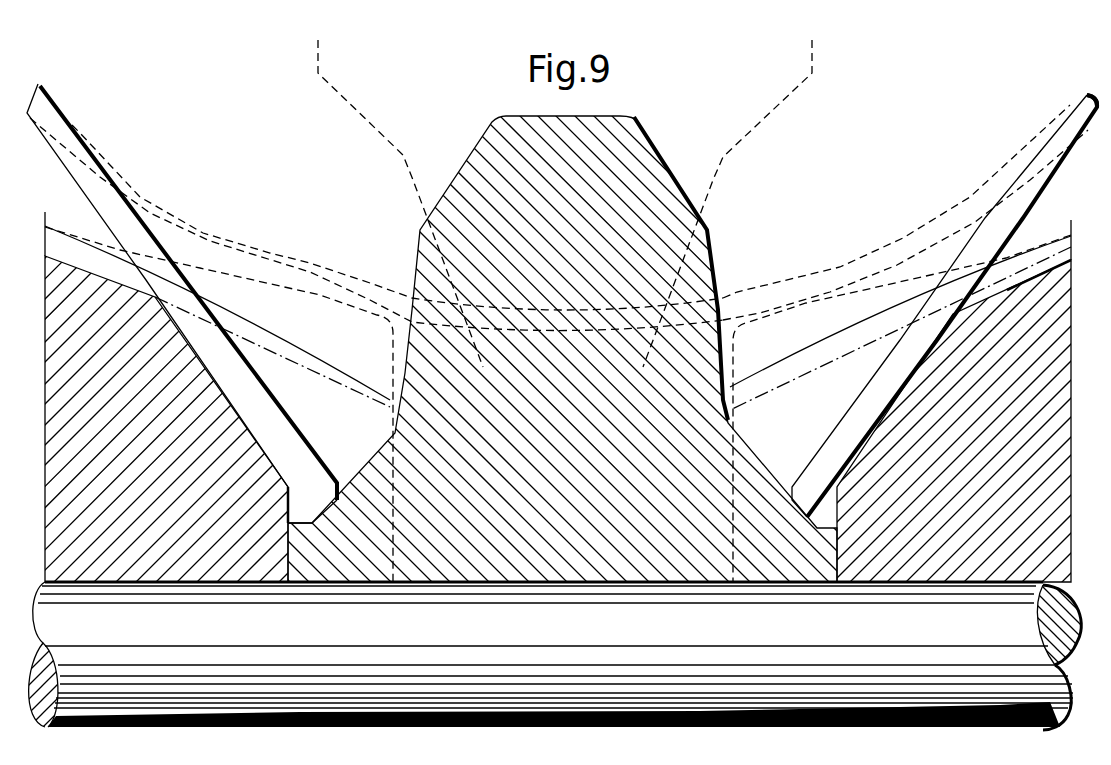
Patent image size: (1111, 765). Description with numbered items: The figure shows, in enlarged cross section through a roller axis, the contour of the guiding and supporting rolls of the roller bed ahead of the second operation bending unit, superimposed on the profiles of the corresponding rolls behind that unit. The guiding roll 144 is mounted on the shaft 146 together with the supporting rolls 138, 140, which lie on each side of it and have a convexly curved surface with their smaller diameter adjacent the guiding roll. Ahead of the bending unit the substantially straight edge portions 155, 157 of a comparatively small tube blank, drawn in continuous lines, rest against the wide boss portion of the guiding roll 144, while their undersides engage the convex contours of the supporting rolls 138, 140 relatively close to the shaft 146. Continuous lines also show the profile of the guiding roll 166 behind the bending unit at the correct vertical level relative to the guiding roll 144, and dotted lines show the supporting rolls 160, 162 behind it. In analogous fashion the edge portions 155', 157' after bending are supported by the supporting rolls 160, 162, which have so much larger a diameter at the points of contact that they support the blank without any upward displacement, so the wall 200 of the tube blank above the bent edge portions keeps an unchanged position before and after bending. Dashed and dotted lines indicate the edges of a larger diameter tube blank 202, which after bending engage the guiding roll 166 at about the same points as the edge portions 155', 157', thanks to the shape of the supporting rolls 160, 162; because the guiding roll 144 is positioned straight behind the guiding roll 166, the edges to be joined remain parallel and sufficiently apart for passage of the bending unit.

The supporting roll 138 is at (305, 398).
The supporting roll 140 is at (896, 402).
The guiding roll 144 is at (541, 347).
The shaft 146 is at (530, 582).
The edge portion 155 is at (185, 303).
The edge portion 155' is at (376, 224).
The edge portion 157 is at (942, 306).
The edge portion 157' is at (905, 212).
The supporting roll 160 is at (397, 476).
The supporting roll 162 is at (730, 484).
The guiding roll 166 is at (705, 206).
The wall 200 is at (1067, 122).
The tube blank 202 is at (800, 355).